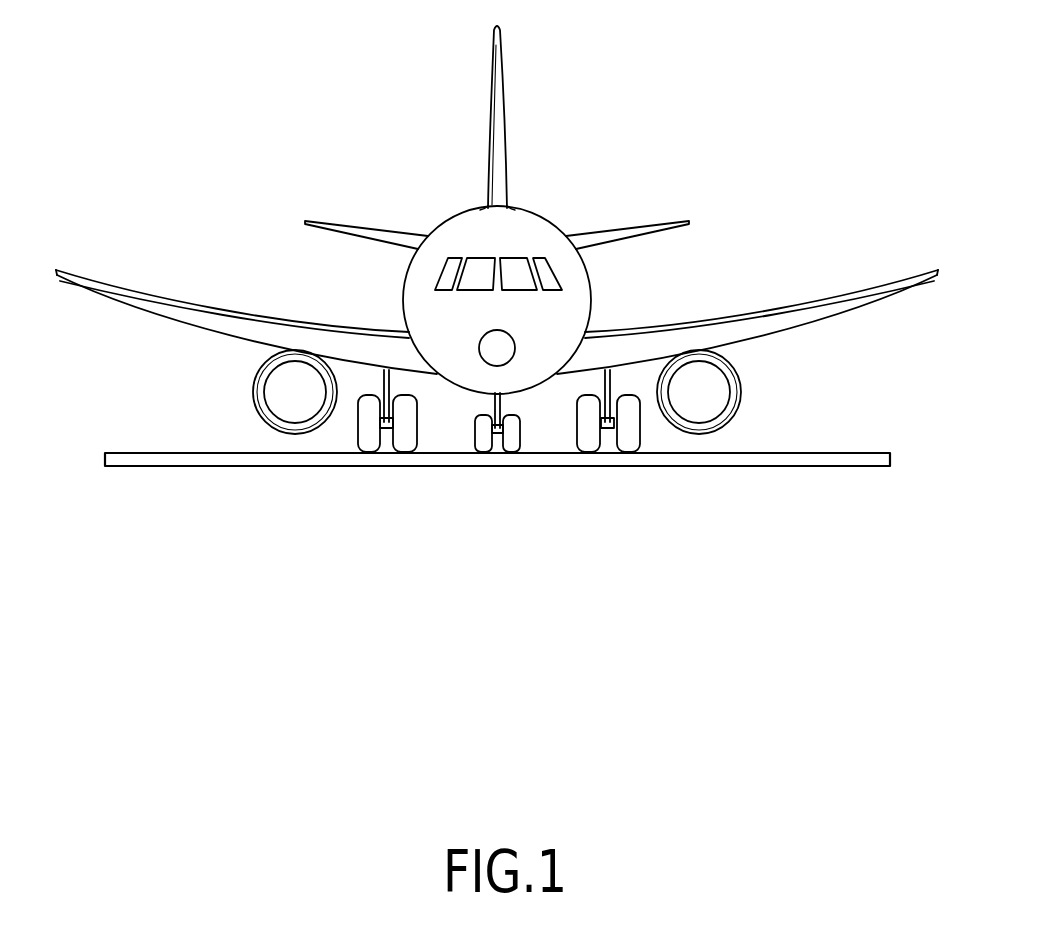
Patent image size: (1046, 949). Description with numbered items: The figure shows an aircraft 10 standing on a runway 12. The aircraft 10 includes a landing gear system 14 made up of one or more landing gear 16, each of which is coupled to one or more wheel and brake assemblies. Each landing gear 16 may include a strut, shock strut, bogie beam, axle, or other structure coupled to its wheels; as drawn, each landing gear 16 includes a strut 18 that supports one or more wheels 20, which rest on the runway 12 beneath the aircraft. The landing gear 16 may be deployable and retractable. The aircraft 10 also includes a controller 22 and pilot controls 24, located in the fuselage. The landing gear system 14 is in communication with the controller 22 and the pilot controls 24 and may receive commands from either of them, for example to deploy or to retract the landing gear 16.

The aircraft 10 is at (337, 118).
The runway 12 is at (876, 453).
The landing gear system 14 is at (802, 652).
The landing gear 16 is at (374, 492).
The strut 18 is at (383, 374).
The wheels 20 is at (357, 437).
The controller 22 is at (538, 353).
The pilot controls 24 is at (440, 268).